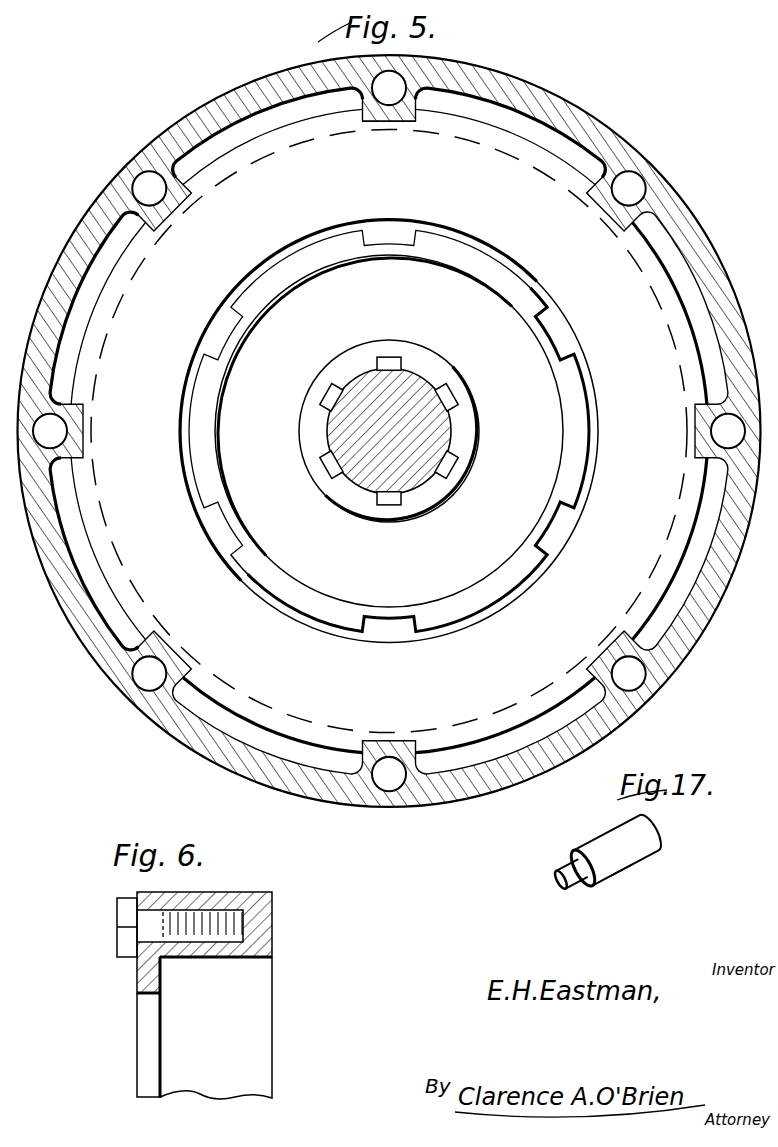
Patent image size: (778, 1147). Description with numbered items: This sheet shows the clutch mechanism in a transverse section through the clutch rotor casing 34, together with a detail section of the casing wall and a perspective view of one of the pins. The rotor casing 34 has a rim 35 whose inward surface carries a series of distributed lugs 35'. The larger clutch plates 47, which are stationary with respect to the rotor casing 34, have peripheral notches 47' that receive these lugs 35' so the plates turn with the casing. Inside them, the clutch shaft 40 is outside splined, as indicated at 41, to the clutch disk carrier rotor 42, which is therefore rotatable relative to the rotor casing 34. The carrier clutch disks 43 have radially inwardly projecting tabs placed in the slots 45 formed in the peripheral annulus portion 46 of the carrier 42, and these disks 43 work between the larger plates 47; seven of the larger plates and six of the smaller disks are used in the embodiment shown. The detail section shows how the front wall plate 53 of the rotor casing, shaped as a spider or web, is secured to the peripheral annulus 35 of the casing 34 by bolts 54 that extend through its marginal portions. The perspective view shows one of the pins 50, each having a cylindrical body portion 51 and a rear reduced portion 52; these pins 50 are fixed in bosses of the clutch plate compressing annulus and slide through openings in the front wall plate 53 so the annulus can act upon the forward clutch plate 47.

In FIG. 5, the clutch rotor casing 34 is at (567, 96).
In FIG. 6, the clutch rotor casing 34 is at (262, 892).
In FIG. 5, the rim 35 is at (389, 418).
In FIG. 6, the rim 35 is at (204, 1028).
In FIG. 5, the lugs 35' is at (389, 414).
In FIG. 5, the clutch shaft 40 is at (354, 470).
In FIG. 5, the splines 41 is at (395, 503).
In FIG. 5, the clutch disk carrier rotor 42 is at (416, 431).
In FIG. 5, the carrier clutch disks 43 is at (387, 236).
In FIG. 5, the slots 45 is at (418, 247).
In FIG. 5, the peripheral annulus portion 46 is at (491, 290).
In FIG. 5, the clutch plates 47 is at (417, 430).
In FIG. 5, the peripheral notches 47' is at (400, 144).
In FIG. 17, the pins 50 is at (650, 862).
In FIG. 17, the cylindrical body portion 51 is at (614, 868).
In FIG. 17, the rear reduced portion 52 is at (560, 868).
In FIG. 6, the front wall plate 53 is at (142, 1035).
In FIG. 6, the bolts 54 is at (117, 940).